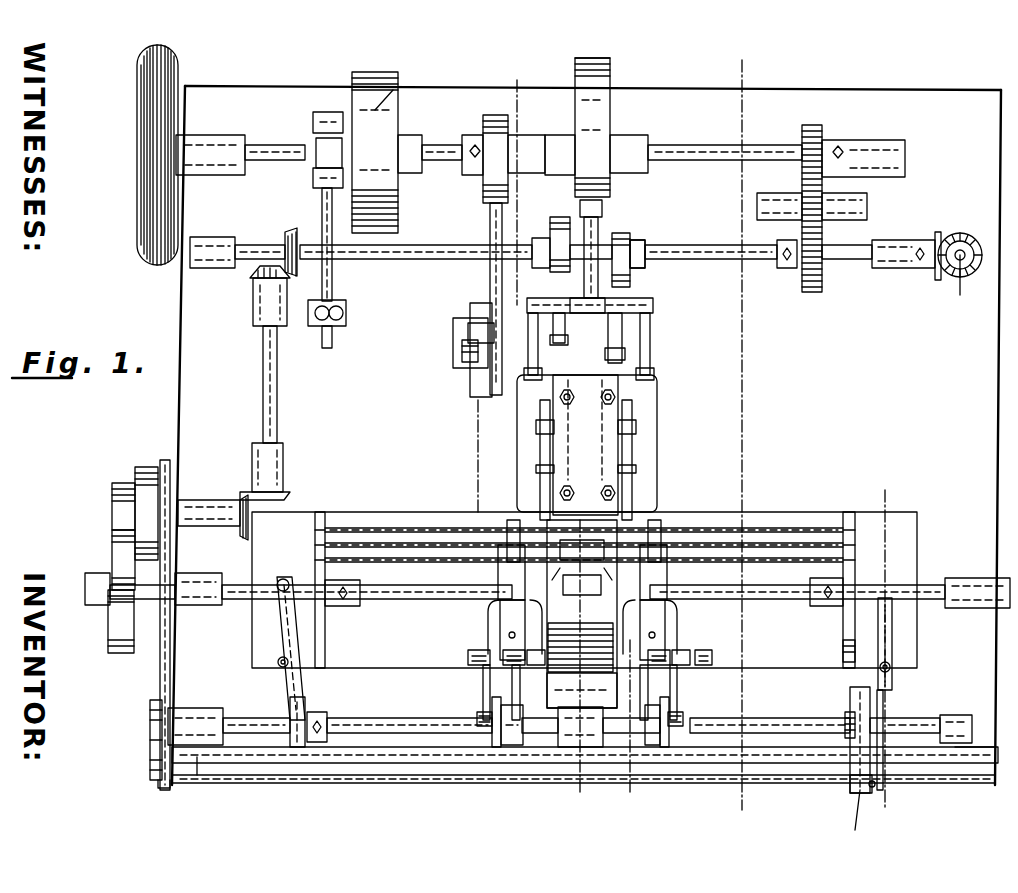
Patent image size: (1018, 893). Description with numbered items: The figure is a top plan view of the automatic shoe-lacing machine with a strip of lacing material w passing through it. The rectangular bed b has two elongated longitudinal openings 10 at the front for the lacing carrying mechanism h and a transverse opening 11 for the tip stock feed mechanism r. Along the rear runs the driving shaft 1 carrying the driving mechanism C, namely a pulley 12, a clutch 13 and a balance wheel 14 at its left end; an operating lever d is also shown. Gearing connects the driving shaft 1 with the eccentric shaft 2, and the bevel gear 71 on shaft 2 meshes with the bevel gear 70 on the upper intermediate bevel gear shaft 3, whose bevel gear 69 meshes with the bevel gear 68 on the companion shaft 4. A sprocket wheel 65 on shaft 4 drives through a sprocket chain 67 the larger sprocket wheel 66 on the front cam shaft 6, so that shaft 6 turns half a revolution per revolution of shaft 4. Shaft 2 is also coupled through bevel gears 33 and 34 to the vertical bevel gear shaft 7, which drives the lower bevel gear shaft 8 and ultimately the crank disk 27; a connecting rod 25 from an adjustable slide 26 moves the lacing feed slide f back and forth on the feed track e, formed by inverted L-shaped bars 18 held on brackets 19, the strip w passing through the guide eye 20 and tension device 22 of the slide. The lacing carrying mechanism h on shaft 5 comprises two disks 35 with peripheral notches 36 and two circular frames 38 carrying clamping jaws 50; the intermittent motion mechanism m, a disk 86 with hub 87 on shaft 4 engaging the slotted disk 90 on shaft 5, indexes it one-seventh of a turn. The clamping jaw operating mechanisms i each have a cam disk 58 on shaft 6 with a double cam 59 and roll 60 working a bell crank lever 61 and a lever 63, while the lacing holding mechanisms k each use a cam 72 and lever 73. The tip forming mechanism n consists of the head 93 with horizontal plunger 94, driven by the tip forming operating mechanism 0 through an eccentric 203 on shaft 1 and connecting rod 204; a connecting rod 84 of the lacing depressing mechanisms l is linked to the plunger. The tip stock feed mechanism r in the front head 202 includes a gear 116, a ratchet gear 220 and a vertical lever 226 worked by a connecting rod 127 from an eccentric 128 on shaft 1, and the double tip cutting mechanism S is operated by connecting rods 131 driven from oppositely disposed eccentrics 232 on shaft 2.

The driving shaft 1 is at (268, 150).
The eccentric shaft 2 is at (404, 250).
The upper intermediate bevel gear shaft 3 is at (262, 383).
The upper intermediate bevel gear shaft 4 is at (195, 506).
The lacing carrying mechanism shaft 5 is at (244, 594).
The front cam shaft 6 is at (385, 722).
The vertical bevel gear shaft 7 is at (735, 444).
The lower bevel gear shaft 8 is at (882, 647).
The tip forming operating mechanism 0 is at (610, 80).
The elongated longitudinal openings 10 is at (388, 514).
The transverse opening 11 is at (472, 395).
The pulley 12 is at (393, 90).
The clutch 13 is at (316, 168).
The balance wheel 14 is at (142, 118).
The inverted L-shaped bars 18 is at (975, 750).
The brackets 19 is at (205, 716).
The guide eye 20 is at (880, 788).
The tension device 22 is at (880, 668).
The connecting rod 25 is at (815, 135).
The slide 26 is at (812, 212).
The crank disk 27 is at (814, 282).
The bevel gear 33 is at (955, 234).
The bevel gear 34 is at (936, 276).
The disks 35 is at (318, 530).
The peripheral notches 36 is at (338, 608).
The circular frame 38 is at (500, 608).
The clamping jaw 50 is at (508, 525).
The cam disk 58 is at (496, 747).
The double cam 59 is at (505, 745).
The roll 60 is at (480, 712).
The bell crank lever 61 is at (518, 708).
The lever 63 is at (484, 685).
The sprocket wheel 65 is at (165, 480).
The sprocket wheel 66 is at (160, 782).
The sprocket chain 67 is at (158, 695).
The bevel gear 68 is at (244, 530).
The bevel gear 69 is at (286, 496).
The bevel gear 70 is at (252, 272).
The bevel gear 71 is at (290, 236).
The cam 72 is at (315, 712).
The lever 73 is at (283, 643).
The connecting rod 84 is at (529, 355).
The disk 86 is at (138, 468).
The circular hub 87 is at (113, 492).
The disk 90 is at (112, 630).
The head 93 is at (620, 432).
The reciprocating plunger 94 is at (575, 353).
The gear 116 is at (582, 614).
The connecting rod 127 is at (490, 222).
The eccentric 128 is at (496, 125).
The connecting rods 131 is at (556, 300).
The front head 202 is at (582, 710).
The eccentric 203 is at (580, 62).
The connecting rod 204 is at (598, 228).
The ratchet gear 220 is at (662, 640).
The vertical lever 226 is at (478, 378).
The gear 232 is at (558, 220).
The driving mechanism C is at (362, 75).
The double tip cutting mechanism S is at (624, 240).
The bed b is at (183, 393).
The operating lever d is at (340, 308).
The lacing feed slide track e is at (395, 775).
The lacing feed slide f is at (858, 760).
The lacing carrying mechanism h is at (350, 603).
The lacing clamping jaw operating mechanisms i is at (478, 652).
The lacing holding mechanisms k is at (290, 700).
The lacing depressing mechanisms l is at (538, 470).
The lacing carrying intermittent motion mechanism m is at (112, 534).
The tip forming mechanism n is at (552, 440).
The tip stock feed mechanism r is at (490, 282).
The strip of lacing material w is at (420, 566).